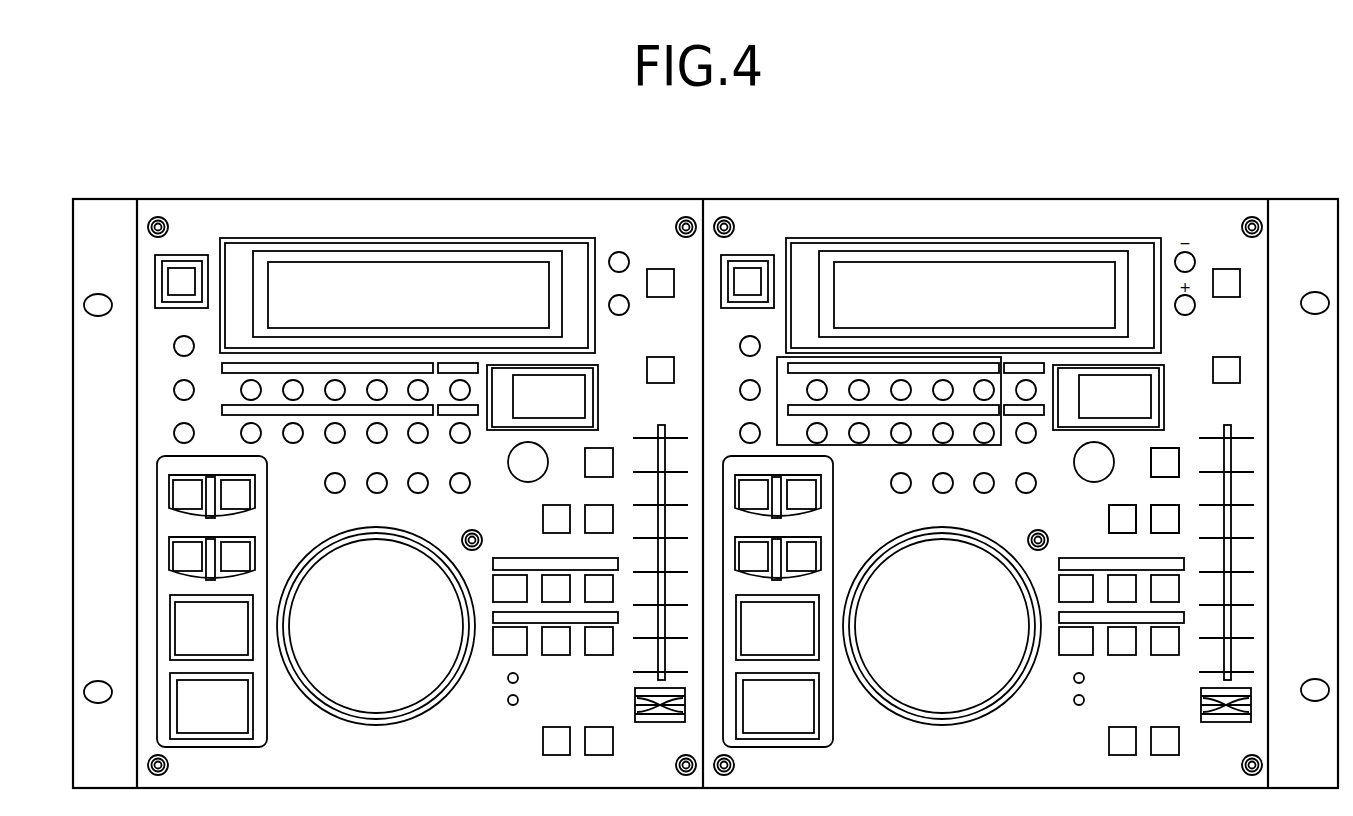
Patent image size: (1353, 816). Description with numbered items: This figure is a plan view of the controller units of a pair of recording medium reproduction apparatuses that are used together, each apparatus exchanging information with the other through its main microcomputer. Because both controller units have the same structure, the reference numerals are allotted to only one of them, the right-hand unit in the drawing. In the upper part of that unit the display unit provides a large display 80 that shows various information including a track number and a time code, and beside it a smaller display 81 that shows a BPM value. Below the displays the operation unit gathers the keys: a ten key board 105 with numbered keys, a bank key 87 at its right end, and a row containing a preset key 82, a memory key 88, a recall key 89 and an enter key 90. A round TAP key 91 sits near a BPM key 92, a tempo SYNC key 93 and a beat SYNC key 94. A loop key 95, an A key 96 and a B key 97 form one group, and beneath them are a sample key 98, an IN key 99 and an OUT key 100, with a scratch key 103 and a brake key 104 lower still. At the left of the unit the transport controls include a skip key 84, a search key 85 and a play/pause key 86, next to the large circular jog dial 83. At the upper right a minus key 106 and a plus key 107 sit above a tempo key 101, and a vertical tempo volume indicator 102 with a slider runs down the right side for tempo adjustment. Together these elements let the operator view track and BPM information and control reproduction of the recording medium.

The display 80 is at (1102, 267).
The display 81 is at (1164, 402).
The preset key 82 is at (899, 493).
The jog dial 83 is at (938, 712).
The skip key 84 is at (812, 513).
The search key 85 is at (818, 545).
The play/pause key 86 is at (789, 720).
The bank key 87 is at (1027, 380).
The memory key 88 is at (941, 493).
The recall key 89 is at (982, 493).
The enter key 90 is at (1022, 493).
The TAP key 91 is at (1086, 480).
The BPM key 92 is at (1150, 452).
The tempo SYNC key 93 is at (1126, 505).
The beat SYNC key 94 is at (1166, 488).
The loop key 95 is at (1062, 578).
The A key 96 is at (1119, 572).
The B key 97 is at (1172, 580).
The sample key 98 is at (1062, 655).
The IN key 99 is at (1111, 655).
The OUT key 100 is at (1160, 655).
The tempo key 101 is at (1222, 357).
The tempo volume indicator 102 is at (1248, 700).
The scratch key 103 is at (1107, 733).
The brake key 104 is at (1177, 745).
The ten key board 105 is at (862, 446).
The minus key 106 is at (1190, 252).
The plus key 107 is at (1192, 296).